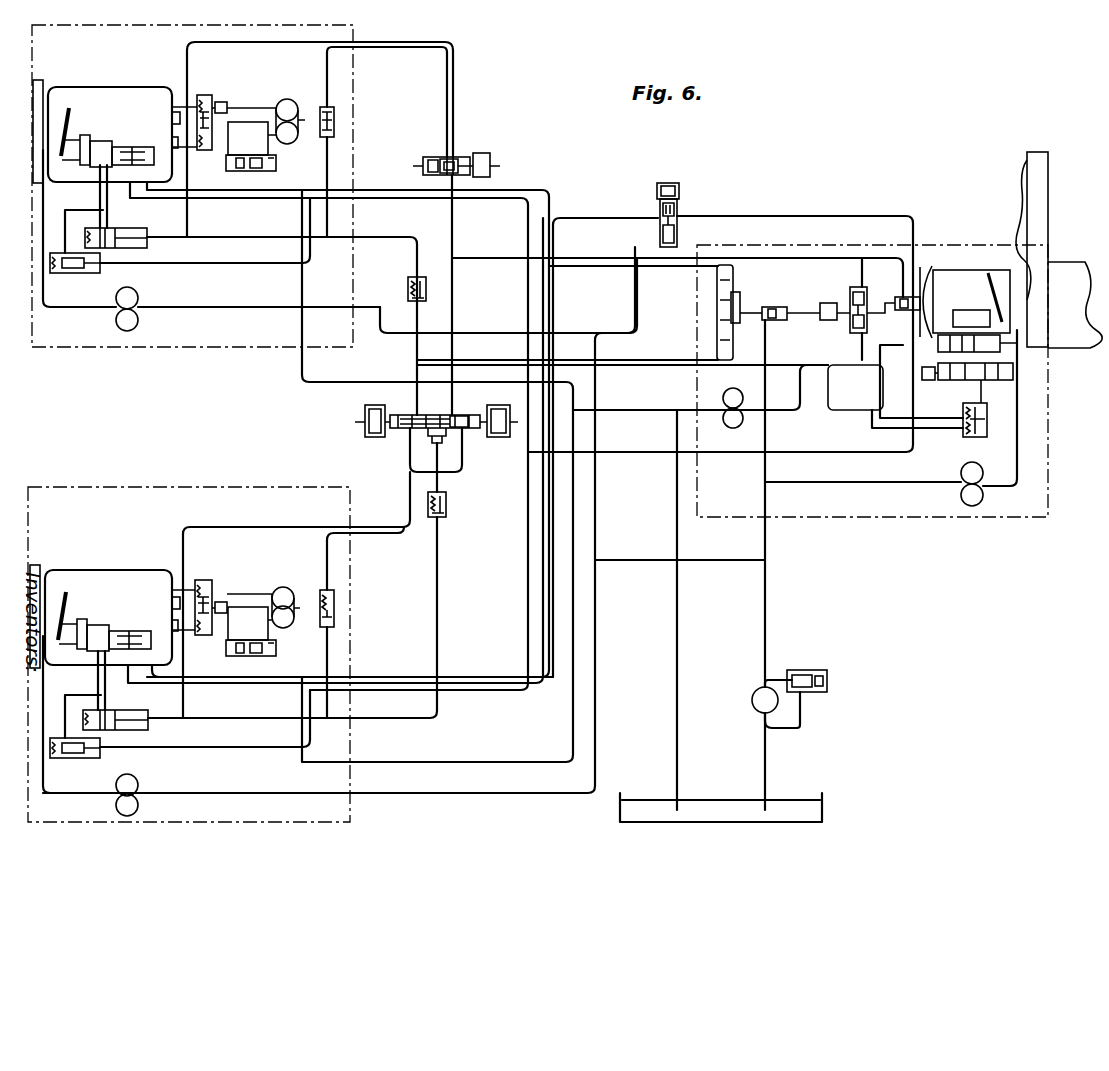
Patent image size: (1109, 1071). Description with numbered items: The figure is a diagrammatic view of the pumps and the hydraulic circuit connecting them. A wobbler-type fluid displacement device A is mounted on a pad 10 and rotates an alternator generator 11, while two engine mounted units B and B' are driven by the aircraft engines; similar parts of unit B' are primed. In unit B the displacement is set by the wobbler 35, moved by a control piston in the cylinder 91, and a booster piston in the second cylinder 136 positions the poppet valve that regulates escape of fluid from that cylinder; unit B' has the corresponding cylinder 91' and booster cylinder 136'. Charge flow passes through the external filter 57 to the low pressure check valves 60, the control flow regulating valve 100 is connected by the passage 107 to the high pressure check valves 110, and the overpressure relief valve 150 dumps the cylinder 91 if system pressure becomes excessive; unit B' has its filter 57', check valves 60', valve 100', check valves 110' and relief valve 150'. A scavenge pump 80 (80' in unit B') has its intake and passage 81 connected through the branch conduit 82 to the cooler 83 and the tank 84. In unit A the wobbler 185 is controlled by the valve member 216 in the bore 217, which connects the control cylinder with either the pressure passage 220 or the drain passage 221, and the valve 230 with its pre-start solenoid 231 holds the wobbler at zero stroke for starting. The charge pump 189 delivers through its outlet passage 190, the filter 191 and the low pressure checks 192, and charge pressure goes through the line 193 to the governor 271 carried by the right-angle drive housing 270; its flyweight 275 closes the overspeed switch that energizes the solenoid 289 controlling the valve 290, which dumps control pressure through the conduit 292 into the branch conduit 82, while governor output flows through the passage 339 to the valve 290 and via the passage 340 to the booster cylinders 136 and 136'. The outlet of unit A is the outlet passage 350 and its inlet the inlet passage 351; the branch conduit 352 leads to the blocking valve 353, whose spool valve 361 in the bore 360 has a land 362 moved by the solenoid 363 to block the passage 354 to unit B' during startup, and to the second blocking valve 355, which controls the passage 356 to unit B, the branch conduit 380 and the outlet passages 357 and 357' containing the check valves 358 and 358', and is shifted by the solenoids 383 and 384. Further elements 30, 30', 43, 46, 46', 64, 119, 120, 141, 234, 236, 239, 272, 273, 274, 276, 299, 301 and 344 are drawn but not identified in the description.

The pad 10 is at (1048, 208).
The alternator generator 11 is at (1070, 254).
The wobbler-type fluid displacement device A is at (972, 262).
The wobbler-type fluid displacement device B is at (189, 654).
The second engine mounted unit B' is at (192, 186).
The pump 30 is at (275, 595).
The pump 30' is at (290, 104).
The wobbler 35 is at (66, 608).
The conduit 43 is at (318, 600).
The motor 46 is at (232, 627).
The motor 46' is at (230, 147).
The external filter 57 is at (225, 585).
The external filter 57' is at (234, 98).
The low pressure check valves 60 is at (205, 586).
The low pressure check valves 60' is at (219, 109).
The conduit 64 is at (62, 798).
The scavenge pump 80 is at (149, 789).
The scavenge pump 80' is at (153, 306).
The passage 81 is at (248, 806).
The branch conduit 82 is at (725, 562).
The cooler 83 is at (752, 703).
The tank 84 is at (620, 815).
The cylinder 91 is at (87, 617).
The cylinder 91' is at (89, 133).
The control flow regulating valve 100 is at (75, 766).
The control flow regulating valve 100' is at (81, 279).
The passage 107 is at (222, 750).
The high pressure check valves 110 is at (363, 604).
The high pressure check valves 110' is at (358, 114).
The conduit 119 is at (335, 645).
The conduit 120 is at (340, 562).
The second cylinder 136 is at (124, 622).
The booster cylinder 136' is at (129, 138).
The conduit 141 is at (165, 676).
The overpressure relief valve 150 is at (146, 700).
The overpressure relief valve 150' is at (134, 206).
The wobbler 185 is at (1003, 300).
The charge pump 189 is at (718, 395).
The outlet passage 190 is at (790, 413).
The filter 191 is at (823, 303).
The low pressure checks 192 is at (850, 295).
The line 193 is at (905, 297).
The valve member 216 is at (1000, 340).
The bore 217 is at (968, 328).
The pressure passage 220 is at (1005, 365).
The drain passage 221 is at (945, 380).
The valve 230 is at (990, 380).
The pre-start solenoid 231 is at (922, 374).
The piston rod 234 is at (993, 410).
The rod 236 is at (1013, 370).
The valve 239 is at (968, 438).
The right-angle drive housing 270 is at (748, 300).
The governor 271 is at (930, 262).
The conduit 272 is at (717, 324).
The valve 273 is at (738, 280).
The conduit 274 is at (717, 346).
The flyweight 275 is at (775, 320).
The conduit 276 is at (770, 542).
The solenoid 289 is at (672, 182).
The valve 290 is at (680, 207).
The conduit 292 is at (634, 308).
The connector 299 is at (922, 374).
The conduit 301 is at (613, 213).
The passage 339 is at (752, 216).
The passage 340 is at (552, 194).
The conduit 344 is at (775, 460).
The outlet passage 350 is at (810, 257).
The inlet passage 351 is at (855, 365).
The branch conduit 352 is at (448, 239).
The blocking valve 353 is at (470, 150).
The passage 354 is at (455, 78).
The second blocking valve 355 is at (470, 440).
The passage 356 is at (370, 527).
The outlet passage 357 is at (313, 596).
The outlet passage 357' is at (205, 230).
The check valve 358 is at (459, 522).
The check valve 358' is at (392, 285).
The bore 360 is at (440, 158).
The spool valve 361 is at (466, 150).
The land 362 is at (462, 172).
The solenoid 363 is at (484, 156).
The branch conduit 380 is at (455, 472).
The solenoid 383 is at (372, 437).
The solenoid 384 is at (497, 410).